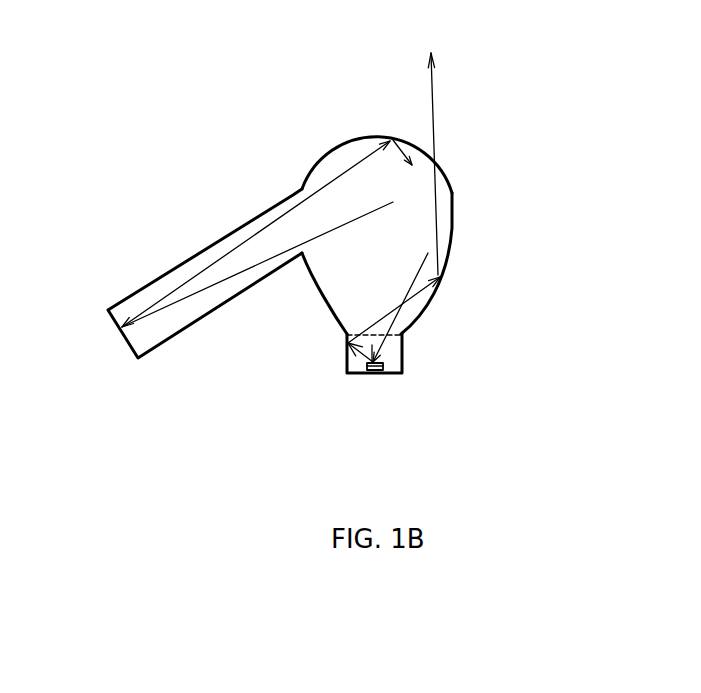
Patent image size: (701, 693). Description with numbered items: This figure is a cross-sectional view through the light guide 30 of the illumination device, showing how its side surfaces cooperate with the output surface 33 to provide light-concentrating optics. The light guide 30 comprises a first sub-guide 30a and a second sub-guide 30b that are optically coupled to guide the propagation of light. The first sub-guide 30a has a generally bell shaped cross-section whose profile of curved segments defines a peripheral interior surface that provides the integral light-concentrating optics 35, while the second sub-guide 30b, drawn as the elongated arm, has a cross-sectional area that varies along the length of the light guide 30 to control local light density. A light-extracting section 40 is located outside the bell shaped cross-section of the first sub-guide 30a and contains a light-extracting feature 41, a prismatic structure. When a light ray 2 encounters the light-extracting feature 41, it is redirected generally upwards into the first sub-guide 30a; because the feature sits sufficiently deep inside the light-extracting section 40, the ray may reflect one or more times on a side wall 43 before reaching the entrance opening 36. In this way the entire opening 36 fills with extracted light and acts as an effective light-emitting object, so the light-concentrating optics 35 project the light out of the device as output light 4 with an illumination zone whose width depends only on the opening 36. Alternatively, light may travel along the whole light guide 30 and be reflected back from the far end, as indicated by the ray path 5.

The light ray 2 is at (318, 238).
The output light 4 is at (440, 120).
The ray path 5 is at (272, 262).
The light guide 30 is at (314, 210).
The first sub-guide 30a is at (343, 157).
The second sub-guide 30b is at (190, 270).
The output surface 33 is at (390, 138).
The light-concentrating optics 35 is at (453, 223).
The opening 36 is at (404, 348).
The light-extracting section 40 is at (345, 369).
The light-extracting feature 41 is at (376, 374).
The side wall 43 is at (347, 357).